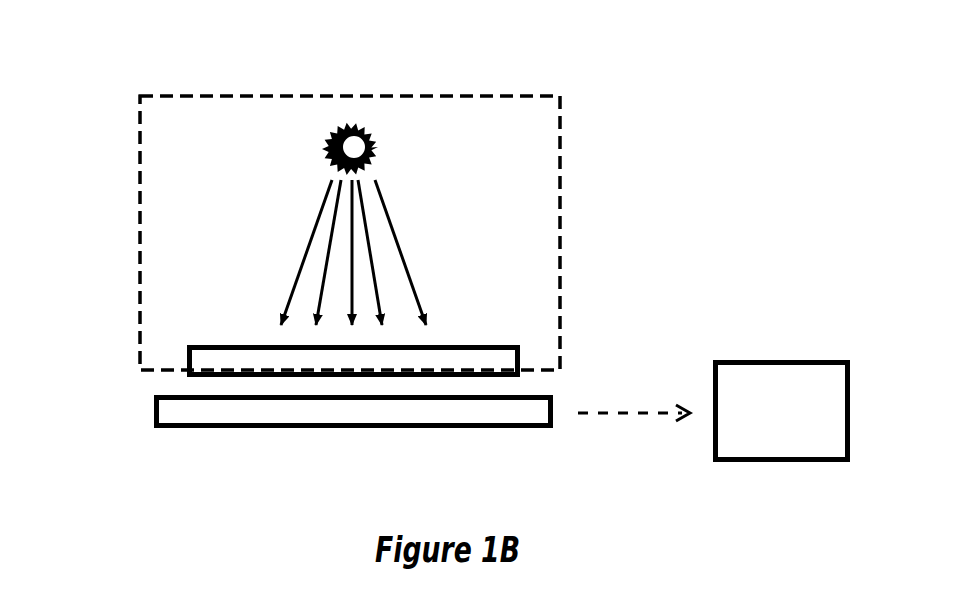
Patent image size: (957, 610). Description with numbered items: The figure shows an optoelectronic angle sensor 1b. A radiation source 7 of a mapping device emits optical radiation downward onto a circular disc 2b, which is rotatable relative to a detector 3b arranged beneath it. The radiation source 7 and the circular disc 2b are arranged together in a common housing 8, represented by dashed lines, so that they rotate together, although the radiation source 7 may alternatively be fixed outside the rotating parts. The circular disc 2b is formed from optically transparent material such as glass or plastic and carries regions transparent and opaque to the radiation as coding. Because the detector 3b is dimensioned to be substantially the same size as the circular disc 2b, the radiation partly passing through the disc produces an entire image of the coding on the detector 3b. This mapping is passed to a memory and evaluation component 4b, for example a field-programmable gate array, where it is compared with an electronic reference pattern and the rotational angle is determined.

The angle sensor 1b is at (760, 113).
The radiation source 7 is at (398, 148).
The housing 8 is at (562, 240).
The circular disc 2b is at (187, 353).
The detector 3b is at (154, 411).
The memory and evaluation component 4b is at (778, 360).